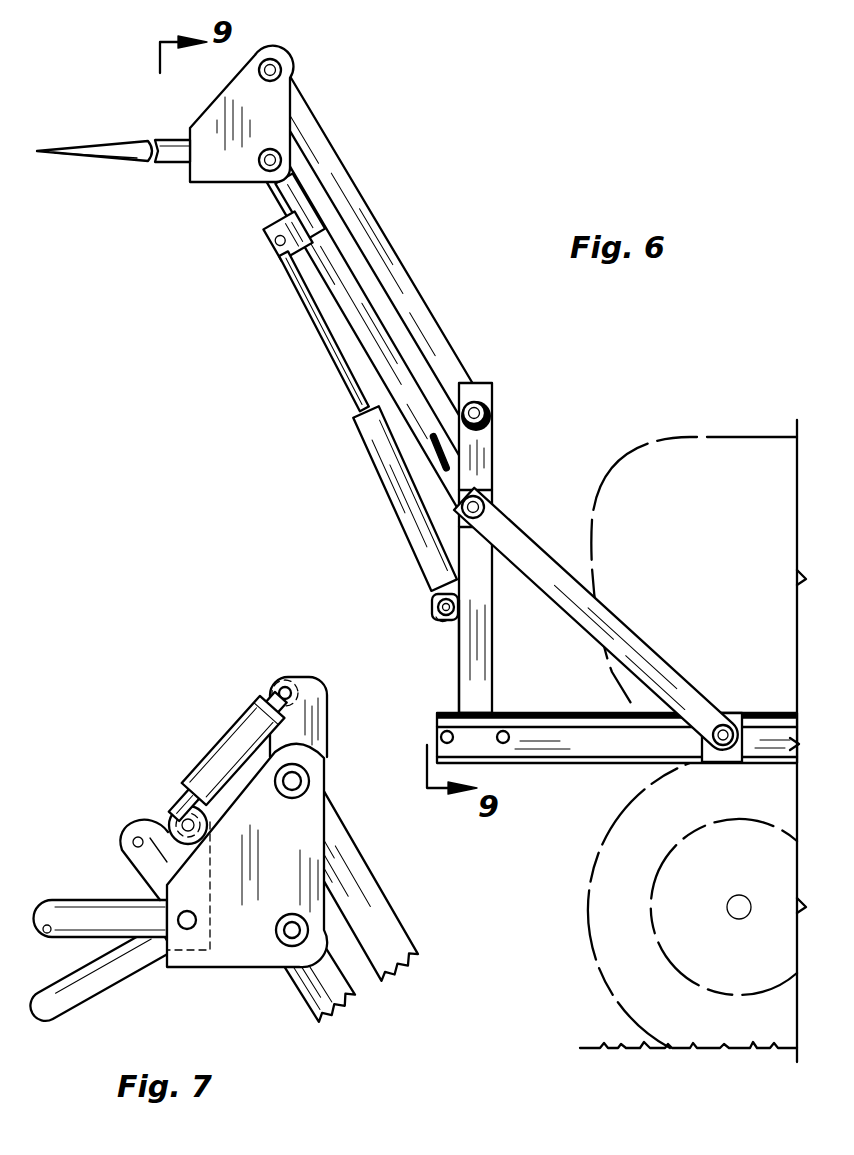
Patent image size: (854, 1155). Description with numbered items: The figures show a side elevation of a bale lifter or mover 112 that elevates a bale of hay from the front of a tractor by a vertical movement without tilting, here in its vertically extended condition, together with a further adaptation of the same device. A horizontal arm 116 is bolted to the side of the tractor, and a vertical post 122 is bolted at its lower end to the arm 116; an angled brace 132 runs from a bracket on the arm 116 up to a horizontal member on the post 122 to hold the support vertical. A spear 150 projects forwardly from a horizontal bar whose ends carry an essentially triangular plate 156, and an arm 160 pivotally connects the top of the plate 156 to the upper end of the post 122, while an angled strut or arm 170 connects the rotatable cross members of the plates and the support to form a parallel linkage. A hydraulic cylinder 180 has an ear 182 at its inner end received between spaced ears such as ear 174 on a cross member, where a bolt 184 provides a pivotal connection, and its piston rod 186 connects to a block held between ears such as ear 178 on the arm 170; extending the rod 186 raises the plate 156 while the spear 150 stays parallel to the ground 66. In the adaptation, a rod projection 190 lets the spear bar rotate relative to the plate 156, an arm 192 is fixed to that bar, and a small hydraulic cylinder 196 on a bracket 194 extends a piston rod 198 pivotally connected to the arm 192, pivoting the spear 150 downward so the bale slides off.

In FIG. 6, the ground 66 is at (592, 1047).
In FIG. 6, the bale lifter or mover 112 is at (364, 285).
In FIG. 6, the horizontal arm 116 is at (573, 750).
In FIG. 6, the vertical post 122 is at (485, 657).
In FIG. 6, the angled arm or brace 132 is at (530, 547).
In FIG. 6, the spear 150 is at (108, 162).
In FIG. 7, the spear 150 is at (80, 910).
In FIG. 6, the triangular plate 156 is at (243, 88).
In FIG. 7, the triangular plate 156 is at (252, 943).
In FIG. 6, the arm 160 is at (352, 186).
In FIG. 6, the angled strut or arm 170 is at (383, 348).
In FIG. 6, the ear 174 is at (445, 627).
In FIG. 6, the ear 178 is at (284, 256).
In FIG. 6, the hydraulic cylinder 180 is at (388, 496).
In FIG. 6, the ear 182 is at (433, 605).
In FIG. 6, the bolt 184 is at (437, 617).
In FIG. 6, the piston rod 186 is at (357, 402).
In FIG. 7, the rod projection 190 is at (187, 931).
In FIG. 7, the arm 192 is at (140, 830).
In FIG. 7, the bracket 194 is at (303, 680).
In FIG. 7, the small hydraulic cylinder 196 is at (253, 733).
In FIG. 7, the piston rod 198 is at (197, 792).